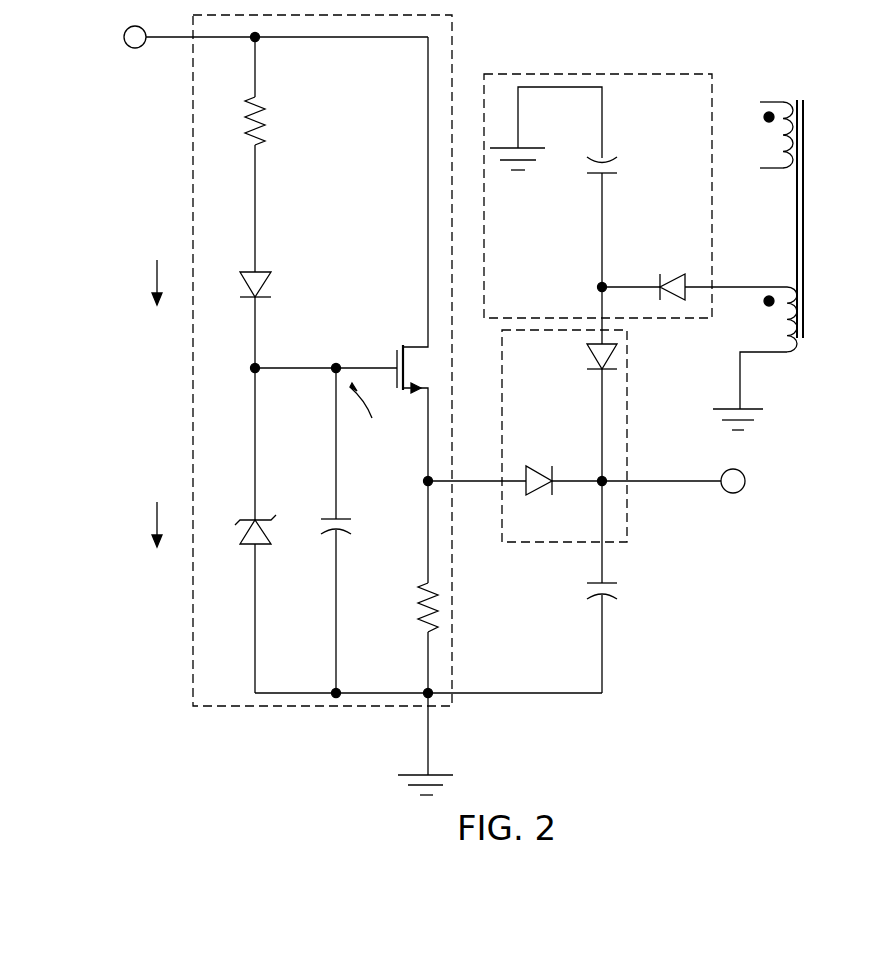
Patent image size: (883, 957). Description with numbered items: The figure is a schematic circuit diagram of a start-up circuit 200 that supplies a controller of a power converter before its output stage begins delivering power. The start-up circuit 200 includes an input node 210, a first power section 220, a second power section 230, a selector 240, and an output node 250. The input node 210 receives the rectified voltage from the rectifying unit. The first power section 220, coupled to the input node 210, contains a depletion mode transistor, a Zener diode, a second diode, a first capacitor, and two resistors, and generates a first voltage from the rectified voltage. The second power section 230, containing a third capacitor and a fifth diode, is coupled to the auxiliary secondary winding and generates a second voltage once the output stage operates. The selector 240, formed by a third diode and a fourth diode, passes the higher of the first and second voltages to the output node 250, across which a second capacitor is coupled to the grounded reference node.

The start-up circuit 200 is at (476, 404).
The input node 210 is at (136, 49).
The first power section 220 is at (455, 35).
The second power section 230 is at (606, 74).
The selector 240 is at (629, 510).
The output node 250 is at (734, 494).